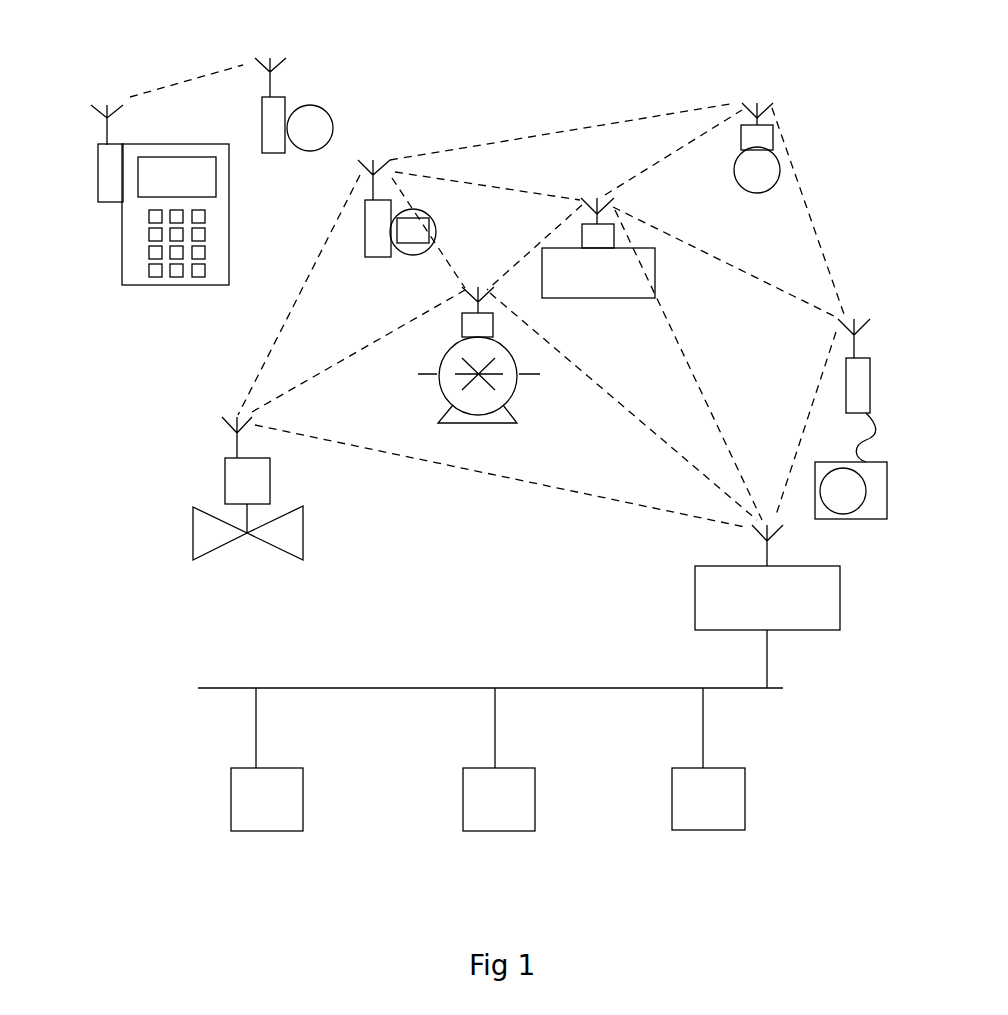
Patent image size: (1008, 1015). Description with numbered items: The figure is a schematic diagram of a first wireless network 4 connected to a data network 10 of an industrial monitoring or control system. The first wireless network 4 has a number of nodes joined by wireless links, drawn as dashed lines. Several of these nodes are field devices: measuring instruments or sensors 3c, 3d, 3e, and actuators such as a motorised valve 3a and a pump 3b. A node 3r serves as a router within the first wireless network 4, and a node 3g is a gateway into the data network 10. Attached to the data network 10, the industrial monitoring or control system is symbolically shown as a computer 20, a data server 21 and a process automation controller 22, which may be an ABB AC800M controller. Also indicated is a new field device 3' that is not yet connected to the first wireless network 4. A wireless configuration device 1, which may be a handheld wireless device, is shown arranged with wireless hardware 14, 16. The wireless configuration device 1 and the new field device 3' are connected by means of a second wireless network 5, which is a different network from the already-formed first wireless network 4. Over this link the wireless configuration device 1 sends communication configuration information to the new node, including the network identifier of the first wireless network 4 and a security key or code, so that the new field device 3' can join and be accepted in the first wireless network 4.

The wireless configuration device 1 is at (130, 237).
The wireless hardware 14 is at (100, 206).
The wireless hardware 16 is at (89, 122).
The second wireless network 5 is at (182, 73).
The new field device 3' is at (323, 86).
The sensor 3c is at (400, 202).
The router 3r is at (657, 263).
The sensor 3d is at (765, 160).
The pump 3b is at (435, 351).
The motorised valve 3a is at (183, 545).
The sensor 3e is at (843, 513).
The gateway 3g is at (815, 620).
The first wireless network 4 is at (625, 115).
The data network 10 is at (788, 702).
The computer 20 is at (246, 759).
The data server 21 is at (477, 759).
The process automation controller 22 is at (691, 759).